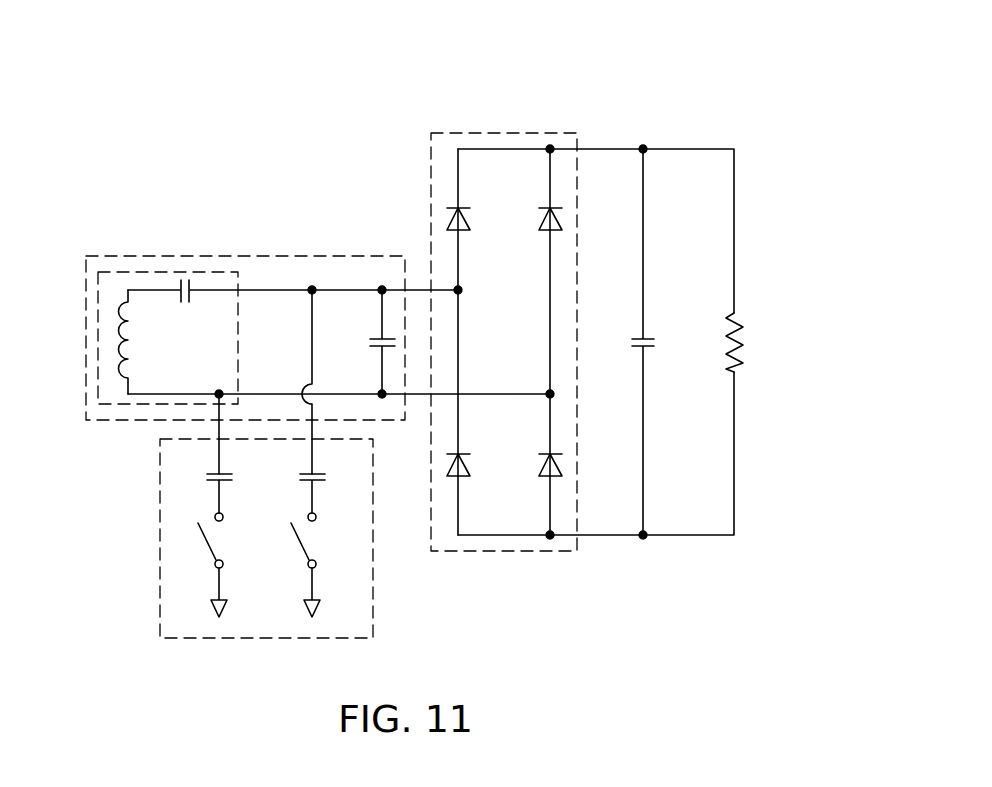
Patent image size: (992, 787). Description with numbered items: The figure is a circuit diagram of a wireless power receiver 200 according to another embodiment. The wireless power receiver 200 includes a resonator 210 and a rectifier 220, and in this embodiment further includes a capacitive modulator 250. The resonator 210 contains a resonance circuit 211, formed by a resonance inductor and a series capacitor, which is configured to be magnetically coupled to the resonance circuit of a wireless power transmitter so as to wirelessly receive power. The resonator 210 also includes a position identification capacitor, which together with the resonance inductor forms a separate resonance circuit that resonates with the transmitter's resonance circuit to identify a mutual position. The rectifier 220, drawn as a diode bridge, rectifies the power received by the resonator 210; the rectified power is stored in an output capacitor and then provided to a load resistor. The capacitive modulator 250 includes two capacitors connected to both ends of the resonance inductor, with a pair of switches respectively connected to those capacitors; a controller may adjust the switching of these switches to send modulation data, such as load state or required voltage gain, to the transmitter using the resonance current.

The wireless power receiver 200 is at (443, 42).
The resonator 210 is at (371, 256).
The resonance circuit 211 is at (97, 343).
The rectifier 220 is at (548, 133).
The capacitive modulator 250 is at (342, 638).